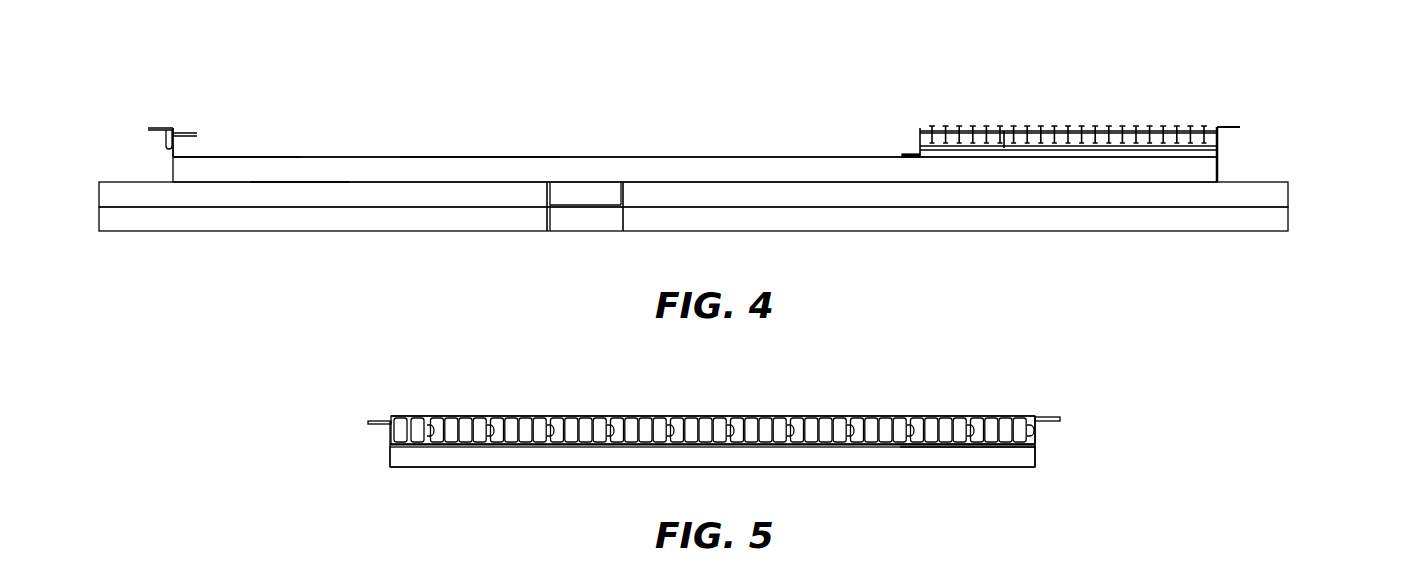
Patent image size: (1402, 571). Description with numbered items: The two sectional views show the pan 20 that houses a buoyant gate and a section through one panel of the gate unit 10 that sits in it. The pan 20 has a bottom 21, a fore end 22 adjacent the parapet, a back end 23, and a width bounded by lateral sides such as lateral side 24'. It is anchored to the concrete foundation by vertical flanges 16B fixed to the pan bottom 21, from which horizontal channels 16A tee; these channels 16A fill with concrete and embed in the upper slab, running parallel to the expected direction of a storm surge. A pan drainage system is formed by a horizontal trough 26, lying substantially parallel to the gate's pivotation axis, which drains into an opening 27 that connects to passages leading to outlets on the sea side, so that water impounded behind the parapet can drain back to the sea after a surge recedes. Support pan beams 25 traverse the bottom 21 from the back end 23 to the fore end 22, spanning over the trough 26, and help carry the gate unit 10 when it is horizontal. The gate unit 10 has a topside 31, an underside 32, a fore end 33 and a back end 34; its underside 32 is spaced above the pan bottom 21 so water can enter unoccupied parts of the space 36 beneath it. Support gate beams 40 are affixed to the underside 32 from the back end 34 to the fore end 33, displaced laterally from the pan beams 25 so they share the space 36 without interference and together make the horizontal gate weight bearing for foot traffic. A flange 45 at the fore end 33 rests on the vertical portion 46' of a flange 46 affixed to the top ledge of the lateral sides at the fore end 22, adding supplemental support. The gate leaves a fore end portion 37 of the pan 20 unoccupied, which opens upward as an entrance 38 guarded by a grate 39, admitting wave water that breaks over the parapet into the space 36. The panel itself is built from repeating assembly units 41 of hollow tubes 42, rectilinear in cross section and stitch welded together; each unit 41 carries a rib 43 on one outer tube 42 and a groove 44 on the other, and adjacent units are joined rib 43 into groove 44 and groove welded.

In FIG. 4, the pan 20 is at (1140, 72).
In FIG. 4, the horizontal channel 16A is at (1280, 222).
In FIG. 4, the vertical flange 16B is at (1280, 195).
In FIG. 4, the bottom 21 is at (303, 180).
In FIG. 4, the fore end 22 is at (1217, 168).
In FIG. 4, the back end 23 is at (173, 165).
In FIG. 4, the lateral side 24' is at (480, 144).
In FIG. 4, the support pan beam 25 is at (402, 179).
In FIG. 4, the trough 26 is at (571, 193).
In FIG. 4, the opening 27 is at (599, 218).
In FIG. 4, the space 36 is at (242, 170).
In FIG. 4, the fore end portion 37 is at (1040, 179).
In FIG. 4, the entrance 38 is at (1007, 148).
In FIG. 4, the grate 39 is at (1068, 126).
In FIG. 4, the flange 46 is at (887, 142).
In FIG. 4, the vertical portion 46' is at (914, 111).
In FIG. 5, the multi-panel gate unit 10 is at (975, 371).
In FIG. 5, the topside 31 is at (958, 416).
In FIG. 5, the underside 32 is at (963, 445).
In FIG. 5, the fore end 33 is at (1040, 430).
In FIG. 5, the back end 34 is at (390, 428).
In FIG. 5, the support gate beam 40 is at (1040, 458).
In FIG. 5, the assembly unit 41 is at (550, 410).
In FIG. 5, the hollow tube 42 is at (437, 420).
In FIG. 5, the rib 43 is at (612, 433).
In FIG. 5, the groove 44 is at (607, 433).
In FIG. 5, the flange 45 is at (1050, 417).